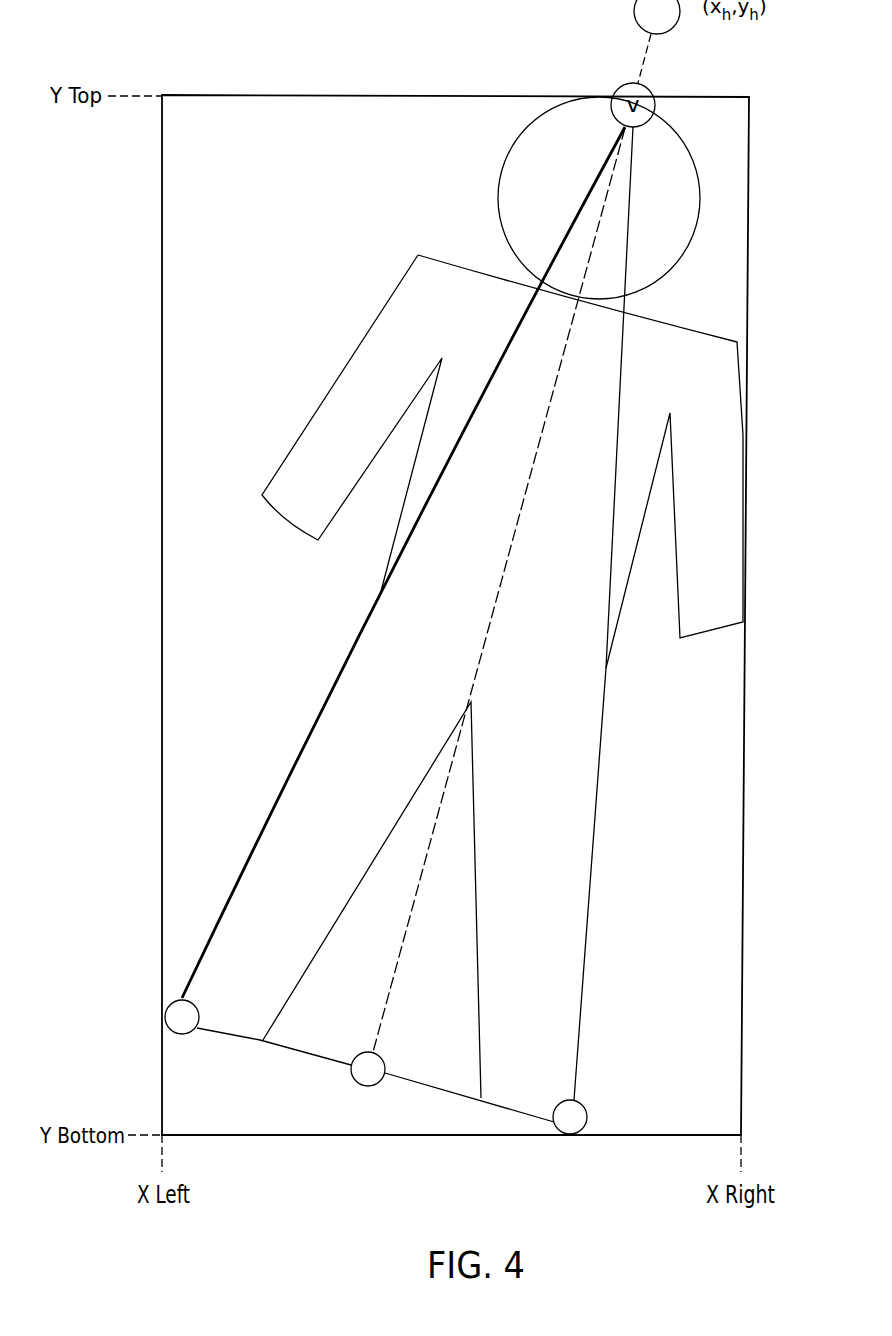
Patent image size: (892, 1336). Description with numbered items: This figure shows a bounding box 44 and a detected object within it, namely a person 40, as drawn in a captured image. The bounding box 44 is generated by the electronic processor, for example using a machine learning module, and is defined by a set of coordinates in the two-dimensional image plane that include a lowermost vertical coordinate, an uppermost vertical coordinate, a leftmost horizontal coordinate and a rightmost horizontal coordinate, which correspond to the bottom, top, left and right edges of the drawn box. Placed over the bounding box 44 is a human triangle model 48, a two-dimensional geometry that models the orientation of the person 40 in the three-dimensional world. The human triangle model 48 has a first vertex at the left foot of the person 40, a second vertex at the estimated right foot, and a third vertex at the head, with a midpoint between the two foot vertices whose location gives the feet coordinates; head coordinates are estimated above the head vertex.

The person 40 is at (747, 356).
The bounding box 44 is at (745, 686).
The human triangle model 48 is at (630, 182).